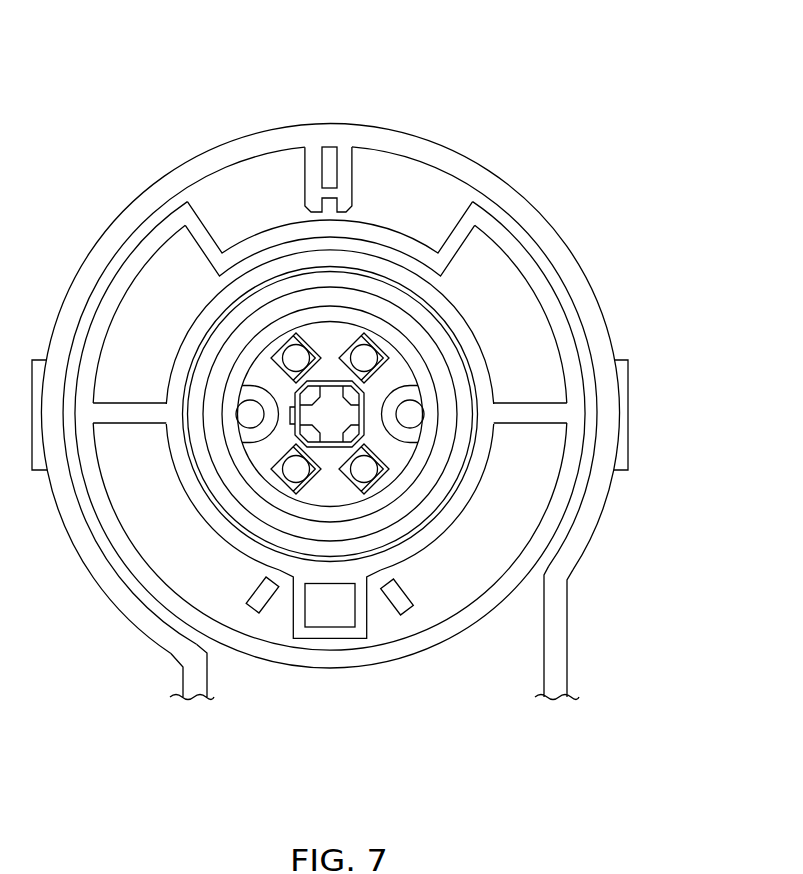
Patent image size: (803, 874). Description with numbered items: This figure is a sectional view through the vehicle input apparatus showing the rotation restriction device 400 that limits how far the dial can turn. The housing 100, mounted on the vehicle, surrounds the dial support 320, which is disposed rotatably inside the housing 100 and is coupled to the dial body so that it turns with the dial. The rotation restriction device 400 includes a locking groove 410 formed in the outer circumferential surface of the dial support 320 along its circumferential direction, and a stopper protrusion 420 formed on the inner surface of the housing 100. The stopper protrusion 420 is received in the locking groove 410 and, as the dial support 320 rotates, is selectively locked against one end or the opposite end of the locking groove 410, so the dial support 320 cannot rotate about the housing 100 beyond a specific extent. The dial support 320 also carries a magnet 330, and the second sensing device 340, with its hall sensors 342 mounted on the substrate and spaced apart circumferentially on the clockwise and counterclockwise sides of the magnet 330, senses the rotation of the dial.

The housing 100 is at (573, 272).
The dial support 320 is at (457, 630).
The magnet 330 is at (330, 607).
The second sensing device 340 is at (238, 661).
The hall sensors 342 is at (397, 606).
The rotation restriction device 400 is at (413, 37).
The locking groove 410 is at (447, 232).
The stopper protrusion 420 is at (347, 197).